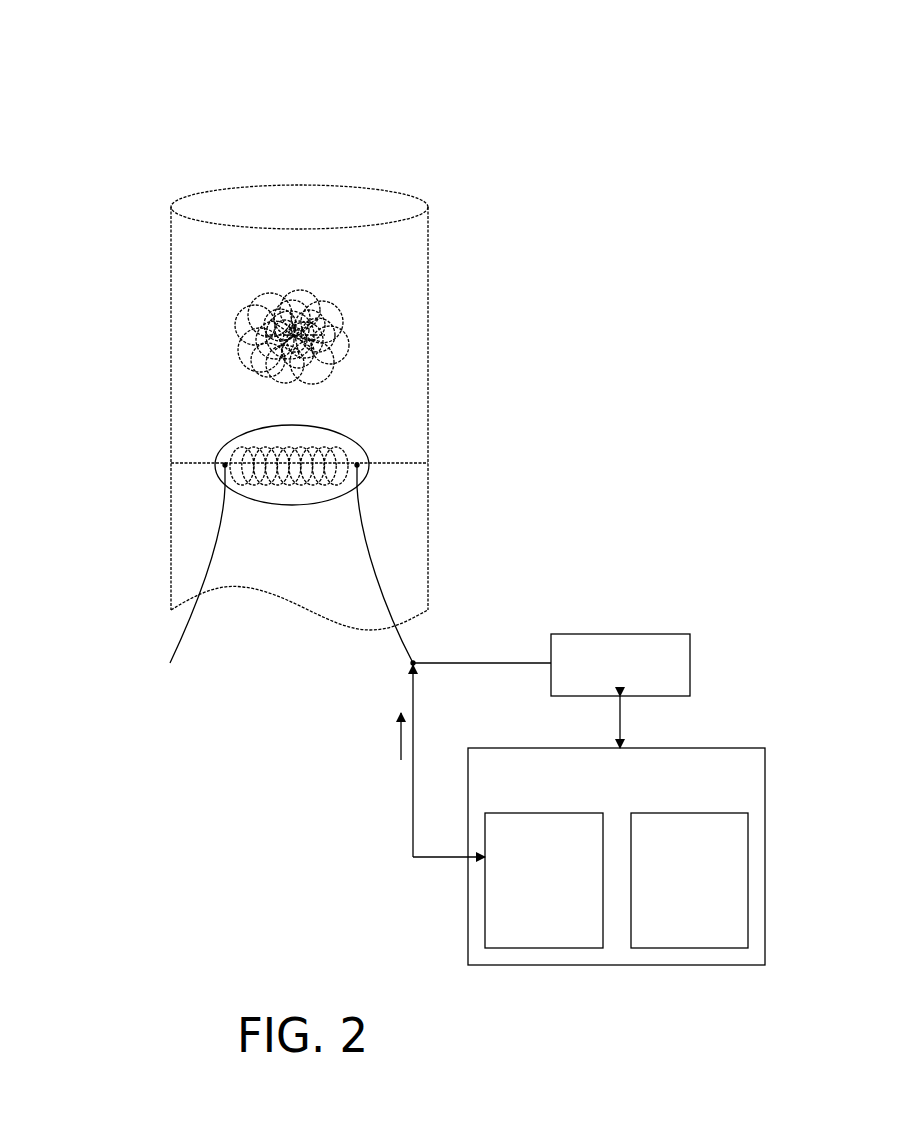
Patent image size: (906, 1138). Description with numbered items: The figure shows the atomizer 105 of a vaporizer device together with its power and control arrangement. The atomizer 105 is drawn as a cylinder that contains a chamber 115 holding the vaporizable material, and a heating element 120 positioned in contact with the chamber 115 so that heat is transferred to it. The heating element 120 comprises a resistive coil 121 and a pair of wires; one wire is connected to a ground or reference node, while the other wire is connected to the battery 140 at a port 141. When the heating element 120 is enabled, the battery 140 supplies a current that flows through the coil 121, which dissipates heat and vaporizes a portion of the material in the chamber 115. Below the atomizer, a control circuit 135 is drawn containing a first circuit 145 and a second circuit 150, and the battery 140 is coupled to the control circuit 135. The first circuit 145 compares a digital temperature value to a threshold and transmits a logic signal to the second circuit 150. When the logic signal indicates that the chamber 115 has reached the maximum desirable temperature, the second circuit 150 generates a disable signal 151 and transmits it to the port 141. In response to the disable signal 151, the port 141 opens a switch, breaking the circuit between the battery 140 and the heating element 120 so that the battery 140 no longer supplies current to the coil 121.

The atomizer 105 is at (186, 94).
The chamber 115 is at (374, 320).
The heating element 120 is at (308, 512).
The coil 121 is at (313, 483).
The control circuit 135 is at (616, 856).
The battery 140 is at (620, 691).
The port 141 is at (413, 663).
The first circuit 145 is at (544, 880).
The second circuit 150 is at (689, 880).
The disable signal 151 is at (395, 761).